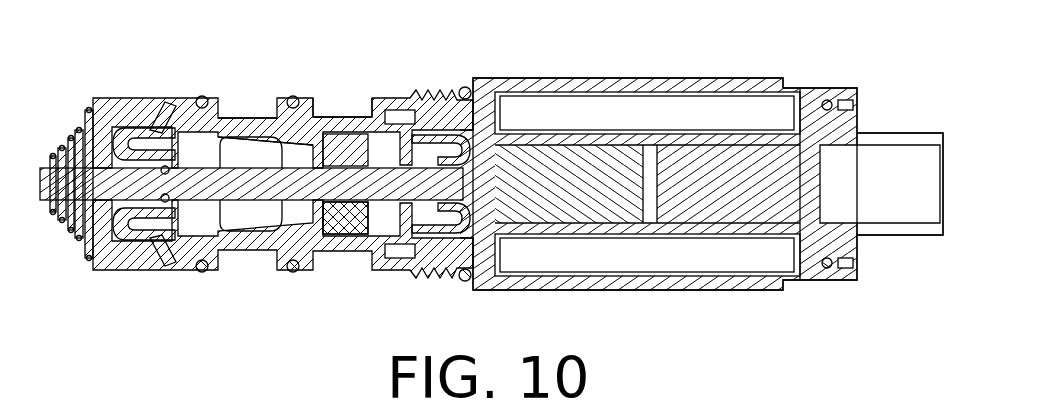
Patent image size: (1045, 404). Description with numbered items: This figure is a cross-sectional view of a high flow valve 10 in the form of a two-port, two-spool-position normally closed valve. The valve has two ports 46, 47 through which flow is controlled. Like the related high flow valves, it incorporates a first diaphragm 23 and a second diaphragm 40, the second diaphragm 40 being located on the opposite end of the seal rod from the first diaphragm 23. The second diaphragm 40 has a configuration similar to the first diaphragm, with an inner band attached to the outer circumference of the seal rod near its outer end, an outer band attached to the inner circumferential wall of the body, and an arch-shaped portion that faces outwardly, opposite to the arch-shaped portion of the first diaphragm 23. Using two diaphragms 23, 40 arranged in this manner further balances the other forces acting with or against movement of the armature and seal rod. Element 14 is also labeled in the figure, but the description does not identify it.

The high flow valve 10 is at (790, 54).
The seal 14 is at (345, 229).
The first diaphragm 23 is at (420, 148).
The second diaphragm 40 is at (150, 112).
The port 46 is at (347, 108).
The port 47 is at (245, 108).